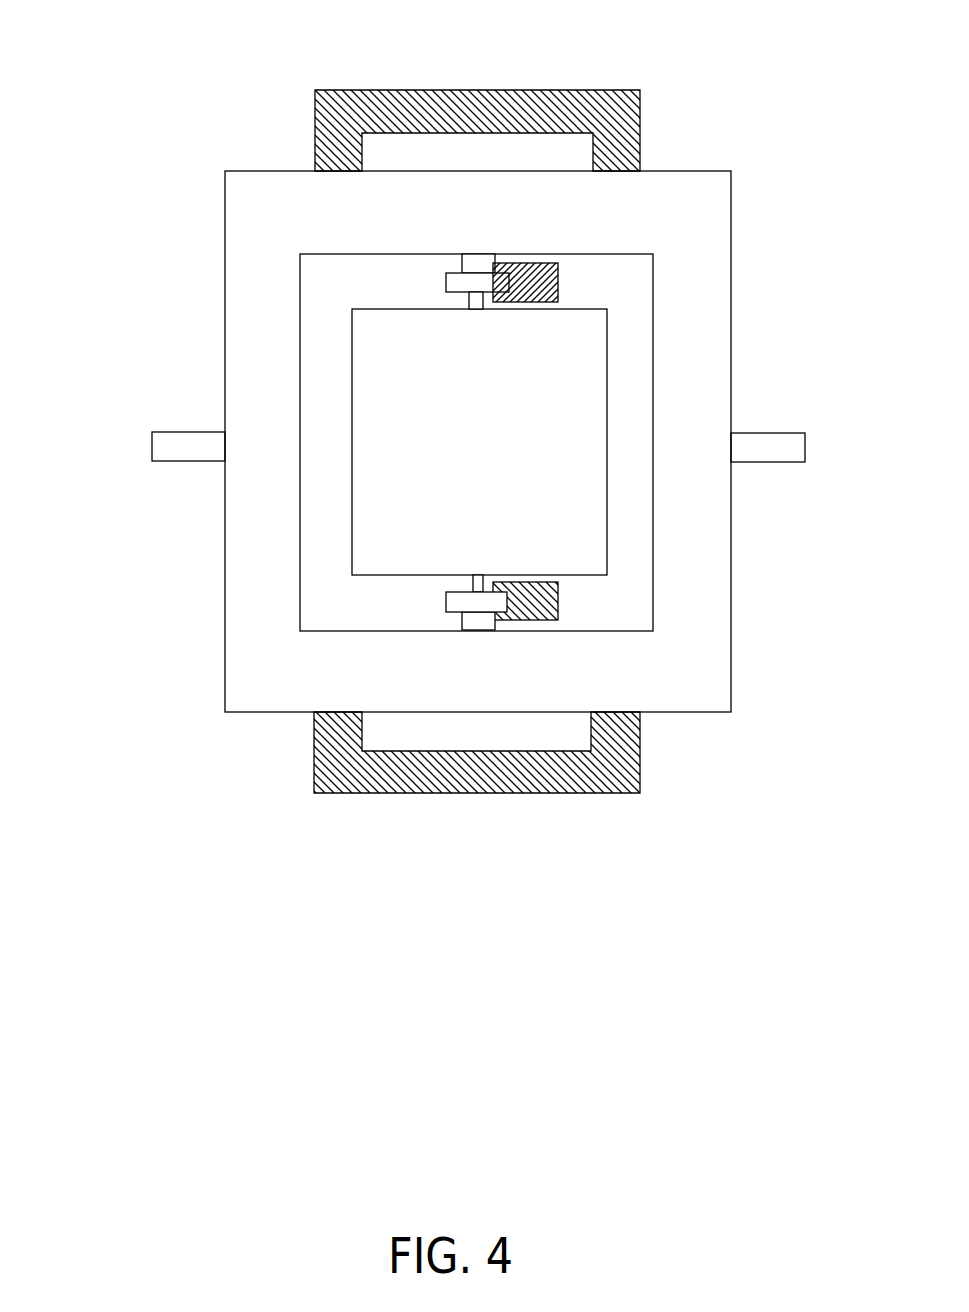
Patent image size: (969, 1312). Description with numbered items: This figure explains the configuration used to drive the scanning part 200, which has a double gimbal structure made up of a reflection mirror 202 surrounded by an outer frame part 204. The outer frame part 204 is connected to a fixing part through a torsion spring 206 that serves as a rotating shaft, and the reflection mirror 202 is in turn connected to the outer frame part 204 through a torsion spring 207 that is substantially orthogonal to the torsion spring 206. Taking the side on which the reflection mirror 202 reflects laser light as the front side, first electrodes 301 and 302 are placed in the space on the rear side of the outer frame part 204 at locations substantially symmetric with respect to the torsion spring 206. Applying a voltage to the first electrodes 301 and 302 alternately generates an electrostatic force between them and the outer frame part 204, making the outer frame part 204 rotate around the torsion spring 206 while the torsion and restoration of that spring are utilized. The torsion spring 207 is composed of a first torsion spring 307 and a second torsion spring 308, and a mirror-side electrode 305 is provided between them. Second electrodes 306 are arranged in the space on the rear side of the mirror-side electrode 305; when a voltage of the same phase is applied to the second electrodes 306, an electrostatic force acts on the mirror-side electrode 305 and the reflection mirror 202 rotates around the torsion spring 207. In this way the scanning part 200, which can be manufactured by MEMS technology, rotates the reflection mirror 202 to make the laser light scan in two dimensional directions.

The scanning part 200 is at (749, 122).
The reflection mirror 202 is at (550, 385).
The outer frame part 204 is at (722, 641).
The torsion spring 206 is at (181, 440).
The torsion spring 207 is at (293, 631).
The first electrode 301 is at (636, 754).
The first electrode 302 is at (585, 117).
The mirror-side electrode 305 is at (455, 282).
The second electrodes 306 is at (558, 283).
The first torsion spring 307 is at (471, 621).
The second torsion spring 308 is at (473, 584).